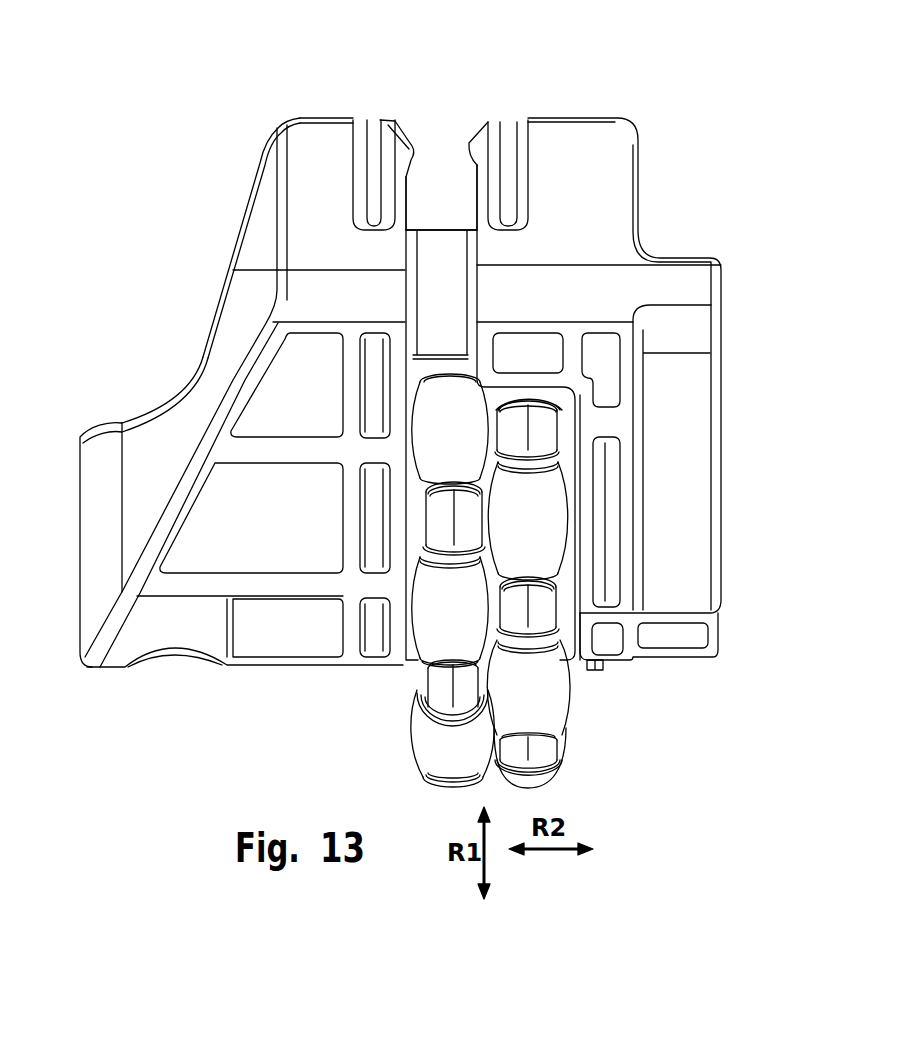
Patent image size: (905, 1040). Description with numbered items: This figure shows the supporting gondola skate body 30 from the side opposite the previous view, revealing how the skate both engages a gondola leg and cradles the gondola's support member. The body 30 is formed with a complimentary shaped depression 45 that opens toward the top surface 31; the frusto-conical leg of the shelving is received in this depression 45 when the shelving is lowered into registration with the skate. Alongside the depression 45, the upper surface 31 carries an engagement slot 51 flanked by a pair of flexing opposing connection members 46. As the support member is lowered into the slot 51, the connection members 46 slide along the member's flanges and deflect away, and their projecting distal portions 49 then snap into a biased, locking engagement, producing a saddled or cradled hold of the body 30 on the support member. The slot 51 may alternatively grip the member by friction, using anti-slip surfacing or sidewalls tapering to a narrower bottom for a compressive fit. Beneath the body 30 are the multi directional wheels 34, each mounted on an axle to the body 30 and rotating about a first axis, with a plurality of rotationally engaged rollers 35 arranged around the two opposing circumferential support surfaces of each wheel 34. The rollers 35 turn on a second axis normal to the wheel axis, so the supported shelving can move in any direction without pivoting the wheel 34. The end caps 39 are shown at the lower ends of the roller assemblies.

The gondola skate body 30 is at (260, 163).
The top surface 31 is at (330, 122).
The multi directional wheel 34 is at (418, 758).
The rollers 35 is at (423, 733).
The roller end cap 39 is at (433, 783).
The shaped depression 45 is at (124, 404).
The connection members 46 is at (398, 188).
The projecting distal portions 49 is at (472, 143).
The engagement slot 51 is at (433, 180).